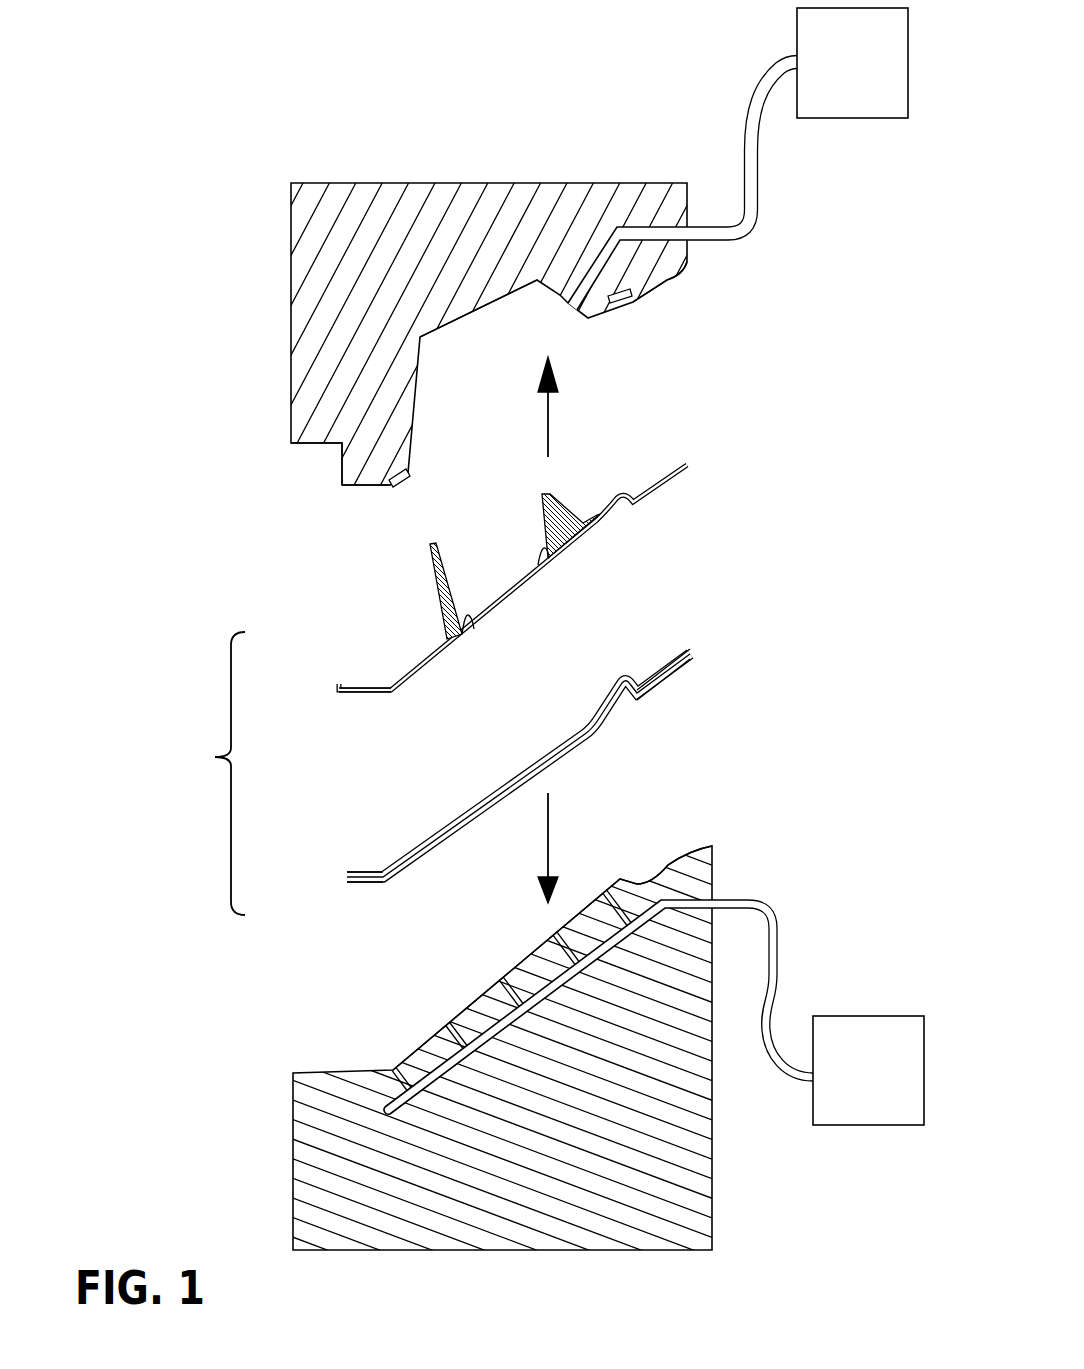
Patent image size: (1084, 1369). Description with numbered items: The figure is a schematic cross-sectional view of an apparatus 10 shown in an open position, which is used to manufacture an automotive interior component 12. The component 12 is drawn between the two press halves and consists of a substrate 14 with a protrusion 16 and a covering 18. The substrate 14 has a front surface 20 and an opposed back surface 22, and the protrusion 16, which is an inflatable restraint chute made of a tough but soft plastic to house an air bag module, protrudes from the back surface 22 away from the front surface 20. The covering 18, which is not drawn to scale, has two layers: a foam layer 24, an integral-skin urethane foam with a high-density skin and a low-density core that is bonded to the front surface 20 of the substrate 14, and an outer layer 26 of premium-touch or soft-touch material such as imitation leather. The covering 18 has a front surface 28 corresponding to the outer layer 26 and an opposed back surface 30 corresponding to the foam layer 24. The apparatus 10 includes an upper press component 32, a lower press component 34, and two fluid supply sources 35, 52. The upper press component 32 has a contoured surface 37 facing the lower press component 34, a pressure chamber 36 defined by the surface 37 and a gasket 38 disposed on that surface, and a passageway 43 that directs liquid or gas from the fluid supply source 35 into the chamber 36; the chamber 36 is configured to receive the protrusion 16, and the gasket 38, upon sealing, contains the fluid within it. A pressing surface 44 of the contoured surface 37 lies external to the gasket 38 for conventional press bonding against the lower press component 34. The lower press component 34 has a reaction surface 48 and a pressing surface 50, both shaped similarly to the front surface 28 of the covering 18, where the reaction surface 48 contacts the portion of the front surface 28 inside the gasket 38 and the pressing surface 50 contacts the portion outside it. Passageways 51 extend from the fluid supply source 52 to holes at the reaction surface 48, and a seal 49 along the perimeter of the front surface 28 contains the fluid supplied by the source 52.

The apparatus 10 is at (207, 125).
The automotive interior component 12 is at (210, 773).
The substrate 14 is at (690, 465).
The protrusion 16 is at (572, 512).
The covering 18 is at (703, 655).
The front surface 20 is at (376, 696).
The back surface 22 is at (388, 686).
The foam layer 24 is at (691, 654).
The outer layer 26 is at (694, 664).
The front surface 28 is at (378, 884).
The back surface 30 is at (372, 872).
The upper press component 32 is at (310, 265).
The lower press component 34 is at (312, 1153).
The fluid supply source 35 is at (797, 47).
The pressure chamber 36 is at (458, 369).
The contoured surface 37 is at (388, 489).
The gasket 38 is at (625, 304).
The passageway 43 is at (637, 225).
The pressing surface 44 is at (665, 289).
The reaction surface 48 is at (470, 1022).
The seal 49 is at (688, 850).
The pressing surface 50 is at (666, 858).
The passageways 51 is at (543, 1007).
The fluid supply source 52 is at (862, 1125).